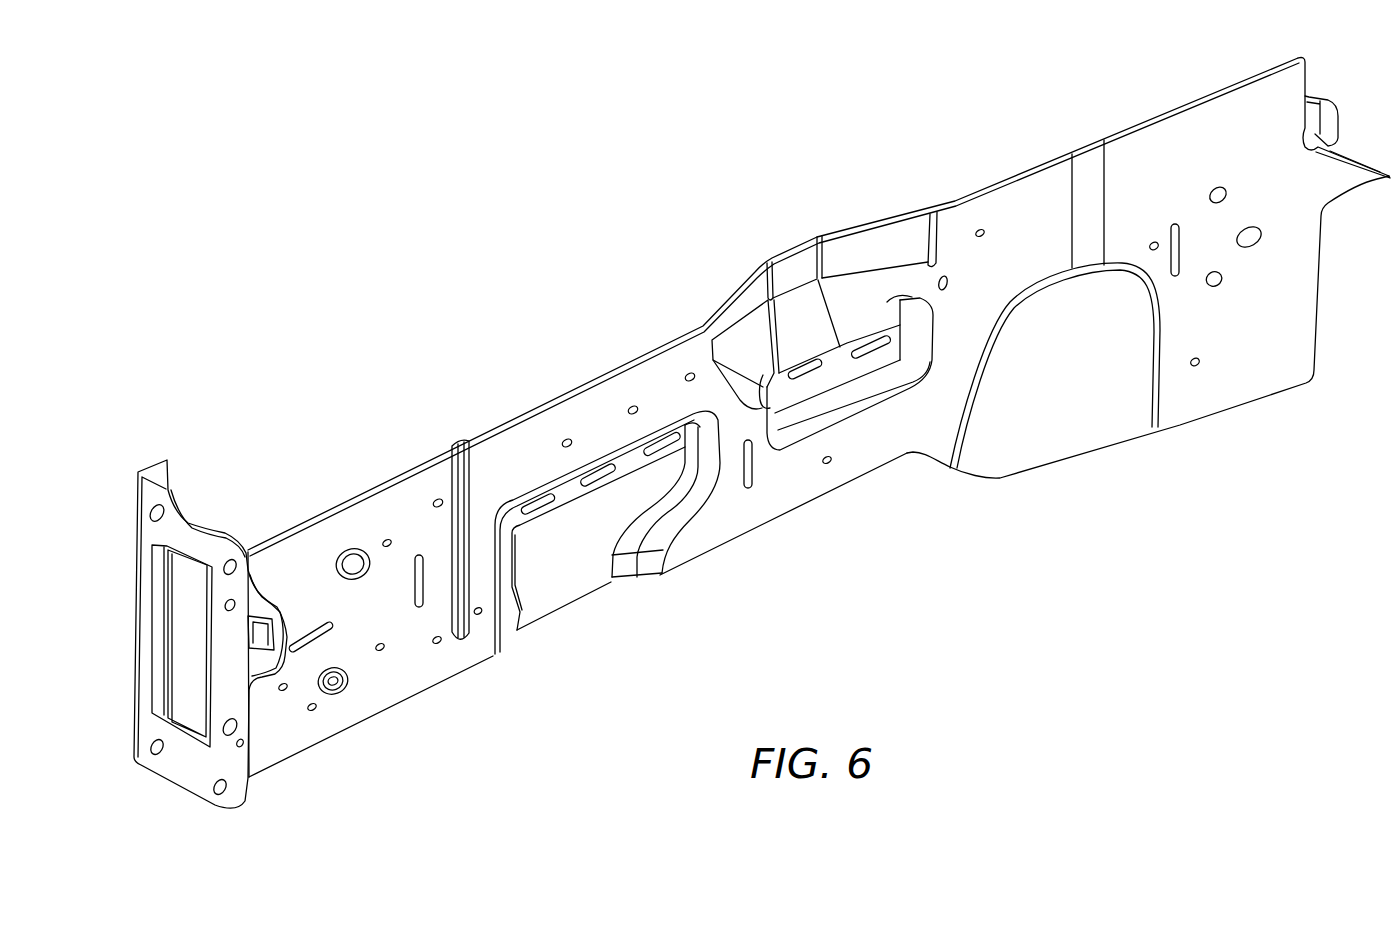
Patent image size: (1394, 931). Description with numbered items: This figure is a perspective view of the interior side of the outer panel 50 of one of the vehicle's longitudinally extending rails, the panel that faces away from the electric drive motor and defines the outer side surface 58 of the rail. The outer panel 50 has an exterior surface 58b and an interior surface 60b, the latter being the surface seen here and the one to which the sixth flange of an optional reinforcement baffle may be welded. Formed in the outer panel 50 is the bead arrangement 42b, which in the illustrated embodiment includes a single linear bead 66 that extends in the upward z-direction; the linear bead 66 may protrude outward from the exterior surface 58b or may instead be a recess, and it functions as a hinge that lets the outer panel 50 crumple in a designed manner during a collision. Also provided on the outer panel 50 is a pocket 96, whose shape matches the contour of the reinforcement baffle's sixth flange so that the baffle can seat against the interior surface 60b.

The outer panel 50 is at (227, 358).
The outer side surface 58 is at (137, 617).
The exterior surface 58b is at (210, 634).
The linear bead 66 is at (454, 487).
The bead arrangement 42b is at (442, 608).
The pocket 96 is at (557, 577).
The interior surface 60b is at (1250, 375).